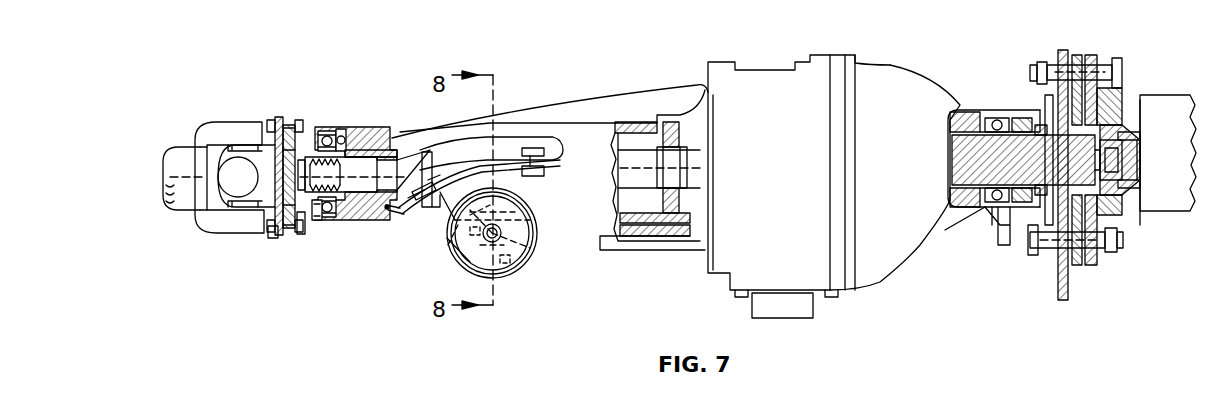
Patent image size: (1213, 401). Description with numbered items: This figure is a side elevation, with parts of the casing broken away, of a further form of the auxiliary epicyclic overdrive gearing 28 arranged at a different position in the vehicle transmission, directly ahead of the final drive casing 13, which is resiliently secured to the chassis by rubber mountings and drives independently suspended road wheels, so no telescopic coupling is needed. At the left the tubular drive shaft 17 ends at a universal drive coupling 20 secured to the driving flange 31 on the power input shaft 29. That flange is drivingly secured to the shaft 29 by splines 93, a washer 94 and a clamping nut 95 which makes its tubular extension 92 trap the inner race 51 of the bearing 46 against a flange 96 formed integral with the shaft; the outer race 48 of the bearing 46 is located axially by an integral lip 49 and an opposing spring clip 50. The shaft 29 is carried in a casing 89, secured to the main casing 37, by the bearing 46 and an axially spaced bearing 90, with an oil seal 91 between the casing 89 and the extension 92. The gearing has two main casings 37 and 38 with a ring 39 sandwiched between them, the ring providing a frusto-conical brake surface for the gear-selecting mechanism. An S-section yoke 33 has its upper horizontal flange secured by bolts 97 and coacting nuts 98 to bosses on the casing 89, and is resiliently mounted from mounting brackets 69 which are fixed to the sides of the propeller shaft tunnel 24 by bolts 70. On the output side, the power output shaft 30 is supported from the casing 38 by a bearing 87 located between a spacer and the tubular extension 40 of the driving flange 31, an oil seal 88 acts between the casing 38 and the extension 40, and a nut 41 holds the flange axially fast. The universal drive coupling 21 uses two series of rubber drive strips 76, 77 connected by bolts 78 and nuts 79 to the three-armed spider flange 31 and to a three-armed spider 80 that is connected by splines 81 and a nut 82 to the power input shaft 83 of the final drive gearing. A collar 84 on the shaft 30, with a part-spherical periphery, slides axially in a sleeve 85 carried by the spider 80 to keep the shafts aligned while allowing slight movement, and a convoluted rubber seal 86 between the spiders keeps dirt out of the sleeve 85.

The tubular drive shaft 17 is at (187, 158).
The universal drive coupling 20 is at (238, 125).
The driving flange 31 is at (288, 117).
The splines 93 is at (323, 131).
The spring clip 50 is at (340, 129).
The bearing 46 is at (350, 132).
The integral lip 49 is at (358, 153).
The inner race 51 is at (372, 153).
The flange 96 is at (392, 140).
The outer race 48 is at (353, 217).
The oil seal 91 is at (334, 217).
The tubular extension 92 is at (318, 220).
The washer 94 is at (303, 232).
The clamping nut 95 is at (280, 226).
The bolts 70 is at (424, 167).
The mounting bracket 69 is at (527, 189).
The propeller shaft tunnel 24 is at (547, 157).
The yoke 33 is at (500, 233).
The bolts 97 is at (444, 203).
The nuts 98 is at (447, 240).
The casing 89 is at (640, 186).
The power input shaft 29 is at (632, 160).
The bearing 90 is at (670, 122).
The main casing 37 is at (799, 186).
The main casing 38 is at (895, 172).
The ring 39 is at (845, 223).
The auxiliary epicyclic overdrive gearing 28 is at (710, 292).
The bearing 87 is at (987, 120).
The oil seal 88 is at (1012, 118).
The power output shaft 30 is at (962, 157).
The convoluted rubber seal 86 is at (1050, 121).
The tubular extension 40 is at (995, 211).
The nut 41 is at (1043, 217).
The rubber drive strips 76 is at (1065, 55).
The rubber drive strips 77 is at (1085, 55).
The bolts 78 is at (1122, 68).
The nuts 79 is at (1040, 66).
The three-armed spider 80 is at (1120, 102).
The collar 84 is at (1122, 127).
The sleeve 85 is at (1110, 202).
The final drive casing 13 is at (1166, 160).
The splines 81 is at (1140, 137).
The power input shaft 83 is at (1147, 152).
The nut 82 is at (1113, 163).
The universal drive coupling 21 is at (1090, 273).